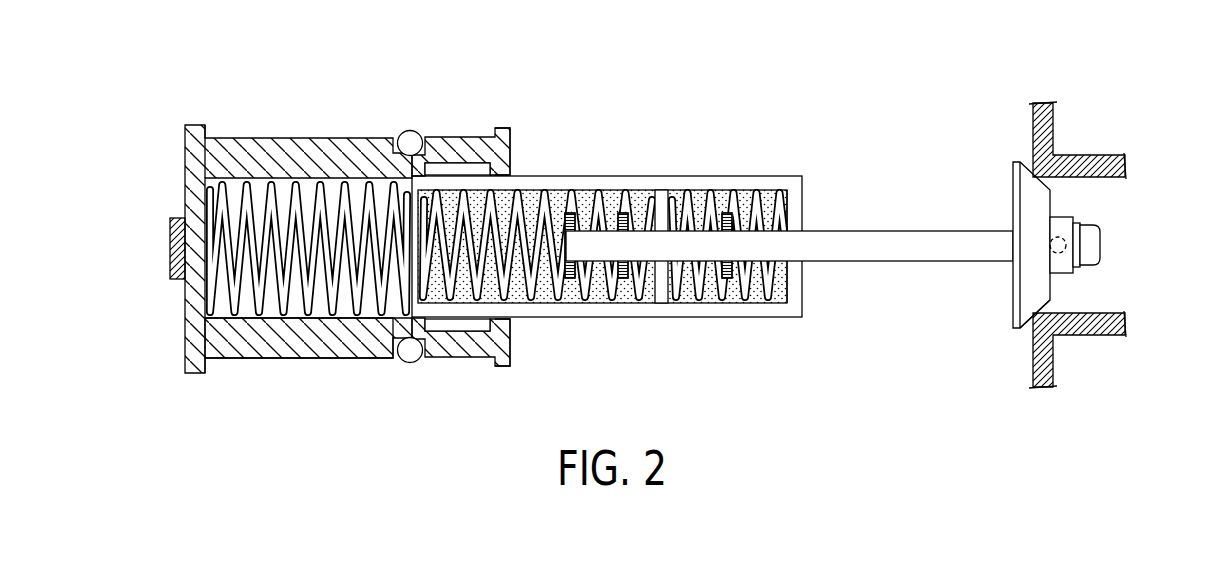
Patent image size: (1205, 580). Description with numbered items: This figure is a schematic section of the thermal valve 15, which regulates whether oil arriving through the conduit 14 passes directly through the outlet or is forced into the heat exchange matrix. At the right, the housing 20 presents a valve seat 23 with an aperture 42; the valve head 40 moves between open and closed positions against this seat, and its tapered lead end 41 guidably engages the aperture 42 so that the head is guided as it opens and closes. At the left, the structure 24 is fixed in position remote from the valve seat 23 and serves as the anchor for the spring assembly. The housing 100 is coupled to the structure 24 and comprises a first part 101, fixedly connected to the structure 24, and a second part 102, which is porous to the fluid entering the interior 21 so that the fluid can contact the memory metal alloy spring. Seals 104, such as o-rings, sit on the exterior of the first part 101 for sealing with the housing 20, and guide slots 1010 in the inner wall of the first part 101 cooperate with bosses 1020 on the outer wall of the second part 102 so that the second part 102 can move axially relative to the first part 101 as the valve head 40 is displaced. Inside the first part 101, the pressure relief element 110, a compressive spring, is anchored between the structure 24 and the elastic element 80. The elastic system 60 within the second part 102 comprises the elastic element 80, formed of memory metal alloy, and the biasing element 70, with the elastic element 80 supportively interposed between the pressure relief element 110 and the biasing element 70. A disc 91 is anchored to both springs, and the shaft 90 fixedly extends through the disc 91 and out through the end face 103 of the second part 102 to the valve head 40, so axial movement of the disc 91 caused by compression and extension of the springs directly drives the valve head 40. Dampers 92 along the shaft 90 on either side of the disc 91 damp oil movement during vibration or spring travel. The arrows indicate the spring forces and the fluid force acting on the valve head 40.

The housing 20 is at (157, 282).
The housing 100 is at (284, 129).
The first part 101 is at (352, 335).
The structure 24 is at (182, 238).
The pressure relief element 110 is at (323, 178).
The interior 21 is at (453, 185).
The guide slots 1010 is at (457, 170).
The bosses 1020 is at (488, 168).
The seals 104 is at (404, 139).
The valve 15 is at (582, 345).
The second part 102 is at (635, 313).
The end face 103 is at (797, 179).
The elastic system 60 is at (742, 302).
The elastic element 80 is at (552, 191).
The biasing element 70 is at (713, 193).
The dampers 92 is at (626, 214).
The disc 91 is at (661, 192).
The shaft 90 is at (880, 232).
The valve head 40 is at (1016, 298).
The aperture 42 is at (1050, 312).
The tapered lead end 41 is at (1050, 212).
The conduit 14 is at (1131, 256).
The valve seat 23 is at (1033, 123).